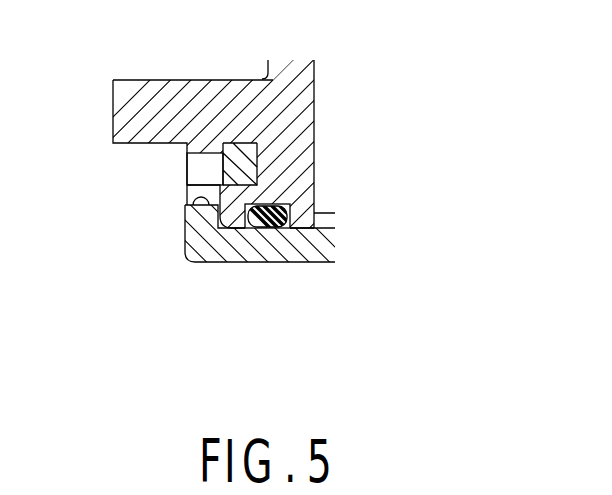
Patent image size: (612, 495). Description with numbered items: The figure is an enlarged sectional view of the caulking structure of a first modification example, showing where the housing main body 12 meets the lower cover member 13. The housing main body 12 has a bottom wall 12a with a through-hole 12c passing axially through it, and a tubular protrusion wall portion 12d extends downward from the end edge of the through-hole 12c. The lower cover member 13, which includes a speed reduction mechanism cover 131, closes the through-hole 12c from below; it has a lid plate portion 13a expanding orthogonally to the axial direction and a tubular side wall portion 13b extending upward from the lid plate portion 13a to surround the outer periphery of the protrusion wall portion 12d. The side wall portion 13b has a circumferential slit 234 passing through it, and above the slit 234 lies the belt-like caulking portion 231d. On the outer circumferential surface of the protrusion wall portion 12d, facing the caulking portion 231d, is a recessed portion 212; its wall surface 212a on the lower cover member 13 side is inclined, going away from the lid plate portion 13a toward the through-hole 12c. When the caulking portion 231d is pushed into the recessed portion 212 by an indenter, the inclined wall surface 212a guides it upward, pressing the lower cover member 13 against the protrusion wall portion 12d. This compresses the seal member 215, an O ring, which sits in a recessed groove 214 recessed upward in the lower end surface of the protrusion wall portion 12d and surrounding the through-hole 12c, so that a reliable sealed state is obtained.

The housing main body 12 is at (320, 70).
The bottom wall 12a is at (136, 90).
The through-hole 12c is at (445, 163).
The protrusion wall portion 12d is at (314, 108).
The recessed portion 212 is at (233, 143).
The wall surface 212a is at (270, 160).
The caulking portion 231d is at (187, 160).
The slit 234 is at (188, 192).
The lower cover member 13 is at (308, 303).
The lid plate portion 13a is at (330, 243).
The side wall portion 13b is at (186, 225).
The speed reduction mechanism cover 131 is at (326, 264).
The recessed groove 214 is at (268, 226).
The seal member 215 is at (270, 228).